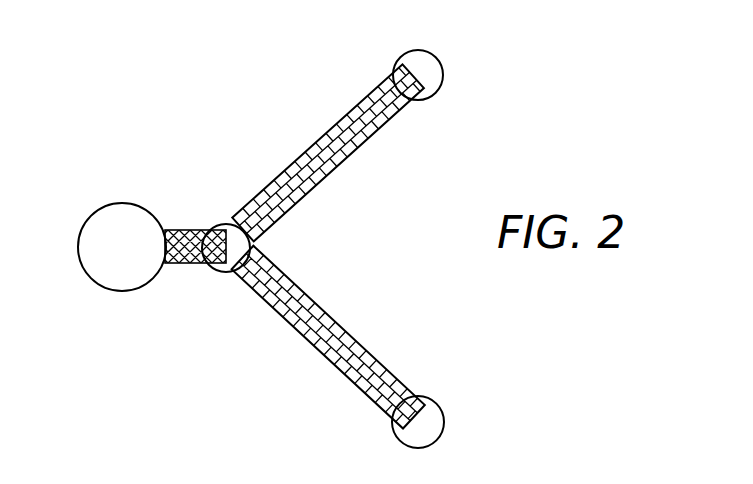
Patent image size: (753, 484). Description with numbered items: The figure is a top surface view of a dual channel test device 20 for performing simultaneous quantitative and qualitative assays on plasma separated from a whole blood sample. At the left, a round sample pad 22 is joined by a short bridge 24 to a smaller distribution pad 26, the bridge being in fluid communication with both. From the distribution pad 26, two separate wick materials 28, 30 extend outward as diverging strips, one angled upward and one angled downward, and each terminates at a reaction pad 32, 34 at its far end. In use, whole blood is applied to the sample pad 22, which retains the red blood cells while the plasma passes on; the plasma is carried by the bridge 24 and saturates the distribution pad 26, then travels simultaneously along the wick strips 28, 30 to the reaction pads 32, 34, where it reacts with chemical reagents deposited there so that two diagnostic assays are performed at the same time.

The dual channel test device 20 is at (112, 204).
The sample pad 22 is at (103, 270).
The bridge 24 is at (182, 262).
The distribution pad 26 is at (243, 233).
The wick material 28 is at (350, 153).
The wick material 30 is at (333, 340).
The reaction pad 32 is at (423, 62).
The reaction pad 34 is at (433, 420).